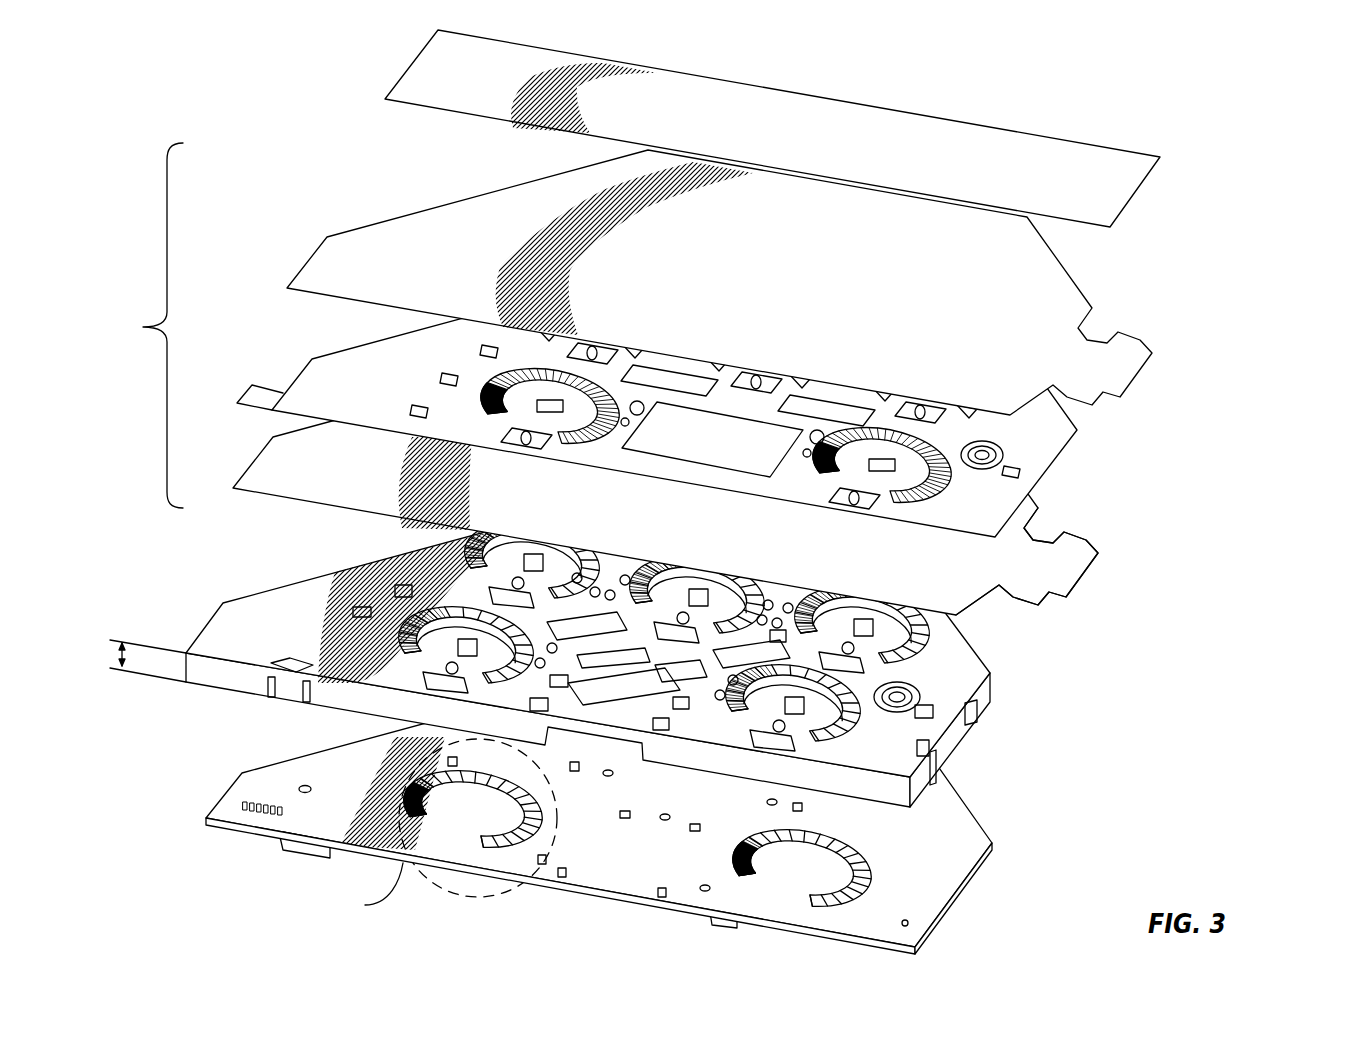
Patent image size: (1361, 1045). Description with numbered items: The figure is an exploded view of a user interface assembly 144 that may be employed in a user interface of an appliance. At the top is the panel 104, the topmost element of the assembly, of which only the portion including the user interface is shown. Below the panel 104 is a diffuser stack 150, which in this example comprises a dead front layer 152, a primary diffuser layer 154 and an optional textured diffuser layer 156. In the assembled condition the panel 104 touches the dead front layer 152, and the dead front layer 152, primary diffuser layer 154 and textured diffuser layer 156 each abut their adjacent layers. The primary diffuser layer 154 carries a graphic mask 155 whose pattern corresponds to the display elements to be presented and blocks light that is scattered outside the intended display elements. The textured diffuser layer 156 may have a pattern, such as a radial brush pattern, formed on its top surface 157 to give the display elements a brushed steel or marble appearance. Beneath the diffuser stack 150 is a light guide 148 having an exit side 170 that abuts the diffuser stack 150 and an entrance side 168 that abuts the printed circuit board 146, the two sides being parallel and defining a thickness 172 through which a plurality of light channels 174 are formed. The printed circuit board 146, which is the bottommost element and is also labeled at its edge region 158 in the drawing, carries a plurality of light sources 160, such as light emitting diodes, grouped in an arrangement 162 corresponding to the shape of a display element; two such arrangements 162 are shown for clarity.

The user interface assembly 144 is at (1253, 118).
The panel 104 is at (1147, 182).
The diffuser stack 150 is at (144, 325).
The dead front layer 152 is at (1143, 343).
The primary diffuser layer 154 is at (1083, 432).
The graphic mask 155 is at (953, 490).
The textured diffuser layer 156 is at (1107, 560).
The top surface 157 is at (963, 572).
The exit side 170 is at (265, 630).
The light channels 174 is at (458, 615).
The thickness 172 is at (118, 650).
The entrance side 168 is at (232, 690).
The light guide 148 is at (992, 688).
The printed circuit board 146 is at (992, 846).
The circuit board edge 158 is at (917, 887).
The light sources 160 is at (870, 852).
The arrangement 162 is at (730, 858).